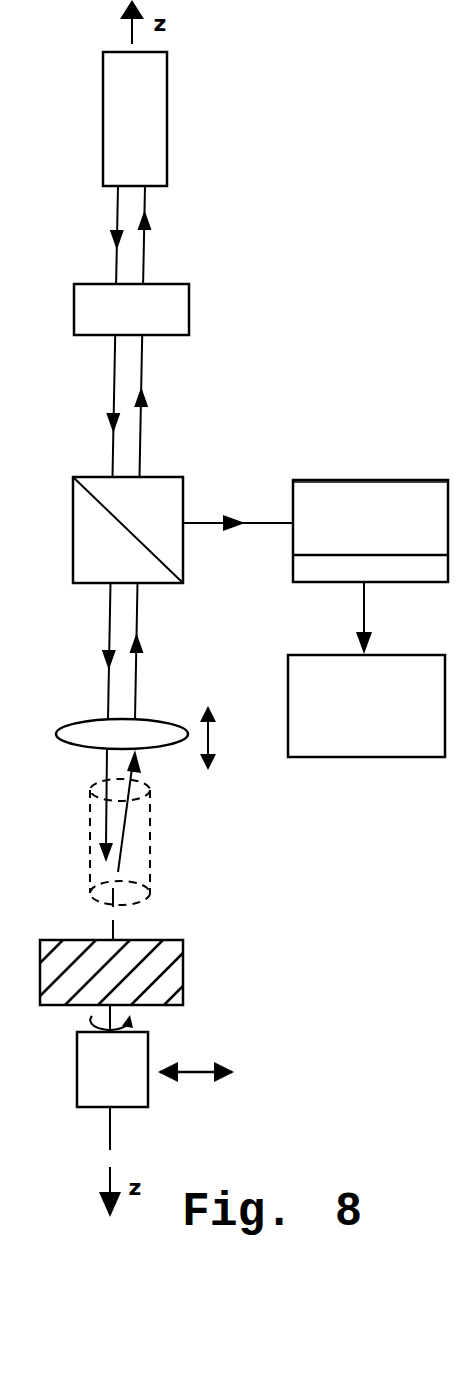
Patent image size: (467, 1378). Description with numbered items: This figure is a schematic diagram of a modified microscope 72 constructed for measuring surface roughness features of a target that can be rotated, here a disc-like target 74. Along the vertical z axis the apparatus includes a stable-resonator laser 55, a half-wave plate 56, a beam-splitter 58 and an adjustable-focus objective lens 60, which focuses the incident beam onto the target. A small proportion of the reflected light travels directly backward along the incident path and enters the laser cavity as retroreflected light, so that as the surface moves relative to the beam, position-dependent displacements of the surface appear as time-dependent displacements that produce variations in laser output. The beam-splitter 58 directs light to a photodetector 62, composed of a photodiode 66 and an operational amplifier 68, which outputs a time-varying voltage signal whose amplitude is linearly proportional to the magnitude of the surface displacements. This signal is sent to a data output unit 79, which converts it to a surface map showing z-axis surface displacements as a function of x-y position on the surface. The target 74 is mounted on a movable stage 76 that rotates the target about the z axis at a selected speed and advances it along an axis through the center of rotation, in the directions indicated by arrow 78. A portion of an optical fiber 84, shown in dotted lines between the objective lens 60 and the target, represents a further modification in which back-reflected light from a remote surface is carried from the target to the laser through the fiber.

The stable-resonator laser 55 is at (164, 135).
The half-wave plate 56 is at (190, 308).
The beam-splitter 58 is at (183, 552).
The adjustable-focus objective lens 60 is at (162, 748).
The photodetector 62 is at (333, 468).
The photodiode 66 is at (293, 503).
The operational amplifier 68 is at (335, 582).
The modified microscope 72 is at (194, 449).
The disc-like target 74 is at (185, 968).
The movable stage 76 is at (127, 1107).
The arrow 78 is at (193, 1070).
The data output unit 79 is at (340, 757).
The optical fiber 84 is at (150, 867).